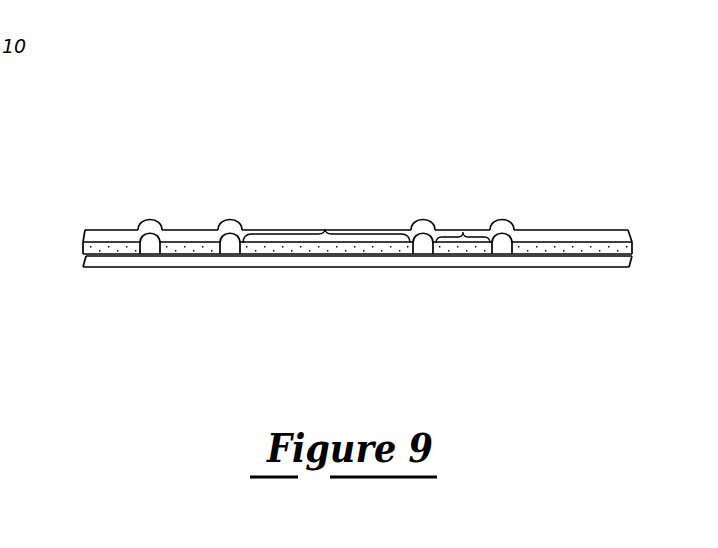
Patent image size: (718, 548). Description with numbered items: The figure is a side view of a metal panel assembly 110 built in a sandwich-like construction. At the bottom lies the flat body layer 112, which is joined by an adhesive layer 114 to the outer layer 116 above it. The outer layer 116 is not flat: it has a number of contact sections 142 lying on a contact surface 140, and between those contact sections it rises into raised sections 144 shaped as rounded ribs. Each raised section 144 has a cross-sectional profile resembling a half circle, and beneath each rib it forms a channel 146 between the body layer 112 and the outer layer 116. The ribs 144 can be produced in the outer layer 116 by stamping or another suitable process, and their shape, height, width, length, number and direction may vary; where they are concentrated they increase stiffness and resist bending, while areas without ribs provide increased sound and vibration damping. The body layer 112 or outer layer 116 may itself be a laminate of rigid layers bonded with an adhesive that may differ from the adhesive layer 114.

The metal panel assembly 110 is at (563, 110).
The body layer 112 is at (568, 263).
The adhesive layer 114 is at (189, 240).
The outer layer 116 is at (546, 237).
The contact surface 140 is at (272, 255).
The contact section 142 is at (366, 223).
The raised section 144 is at (148, 228).
The channel 146 is at (232, 247).